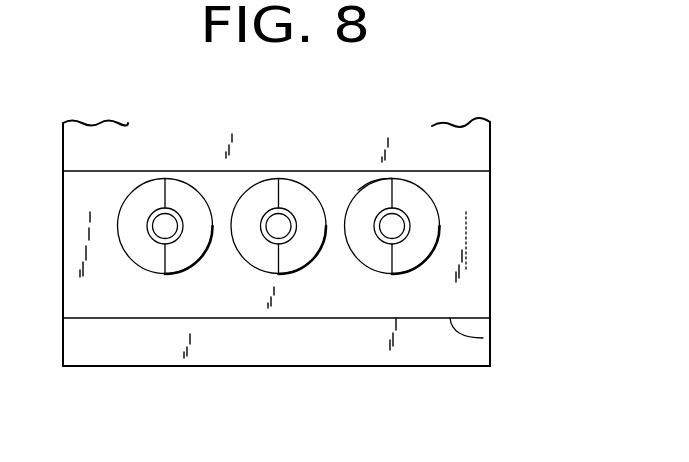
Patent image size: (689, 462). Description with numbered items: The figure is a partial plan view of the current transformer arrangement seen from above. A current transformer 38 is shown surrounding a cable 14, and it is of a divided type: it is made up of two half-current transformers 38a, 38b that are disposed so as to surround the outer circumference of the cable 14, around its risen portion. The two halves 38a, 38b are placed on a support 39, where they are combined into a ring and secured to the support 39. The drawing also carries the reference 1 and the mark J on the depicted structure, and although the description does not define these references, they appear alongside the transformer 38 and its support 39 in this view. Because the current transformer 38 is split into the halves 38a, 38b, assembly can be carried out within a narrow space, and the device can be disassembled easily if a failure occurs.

The bearing housing / frame 1 is at (490, 143).
The cable 14 is at (397, 222).
The current transformer 38 is at (440, 272).
The half-current transformer 38a is at (437, 244).
The half-current transformer 38b is at (367, 270).
The support 39 is at (490, 328).
The junction J is at (385, 193).